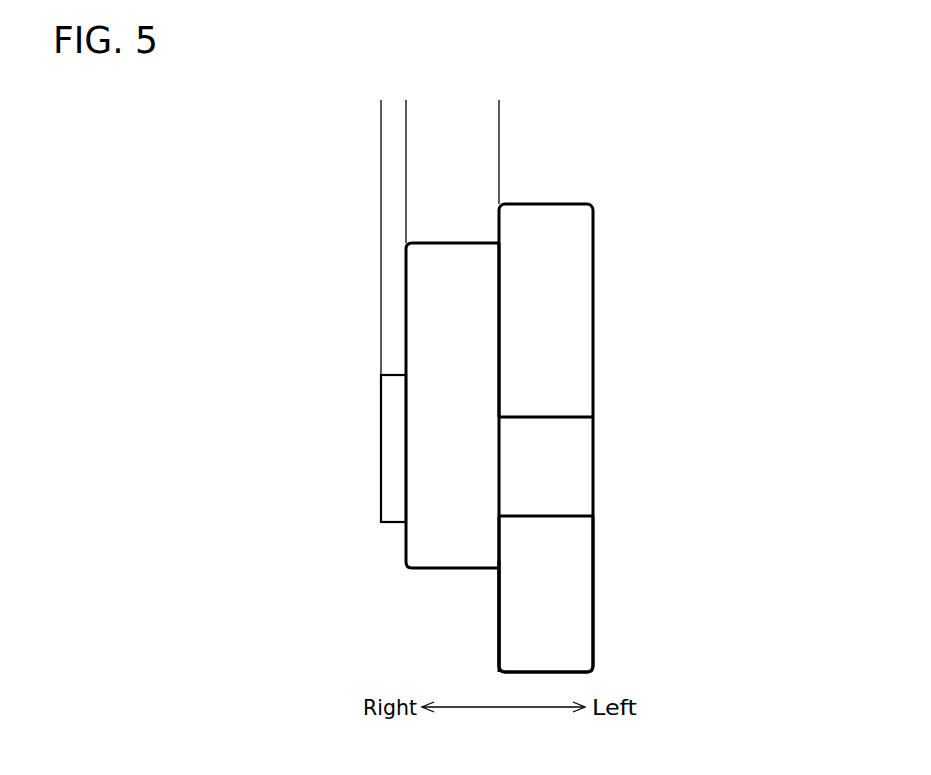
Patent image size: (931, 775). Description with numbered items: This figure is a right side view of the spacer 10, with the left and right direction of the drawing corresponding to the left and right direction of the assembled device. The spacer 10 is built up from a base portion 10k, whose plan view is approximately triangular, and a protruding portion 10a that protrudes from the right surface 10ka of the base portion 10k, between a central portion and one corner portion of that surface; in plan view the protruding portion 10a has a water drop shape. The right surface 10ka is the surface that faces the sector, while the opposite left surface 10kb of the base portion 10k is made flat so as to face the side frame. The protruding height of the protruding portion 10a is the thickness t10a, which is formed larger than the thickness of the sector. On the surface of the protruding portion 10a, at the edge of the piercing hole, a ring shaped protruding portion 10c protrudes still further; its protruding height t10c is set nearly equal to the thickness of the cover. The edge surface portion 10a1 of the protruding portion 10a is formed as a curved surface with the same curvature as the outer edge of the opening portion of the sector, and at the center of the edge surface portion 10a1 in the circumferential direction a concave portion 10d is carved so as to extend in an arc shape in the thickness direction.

The spacer 10 is at (630, 182).
The protruding portion 10a is at (447, 243).
The edge surface portion 10a1 is at (553, 318).
The ring shaped protruding portion 10c is at (378, 440).
The concave portion 10d is at (553, 516).
The base portion 10k is at (542, 204).
The right surface 10ka is at (498, 622).
The left surface 10kb is at (593, 581).
The thickness t10a is at (499, 114).
The protruding height t10c is at (381, 114).